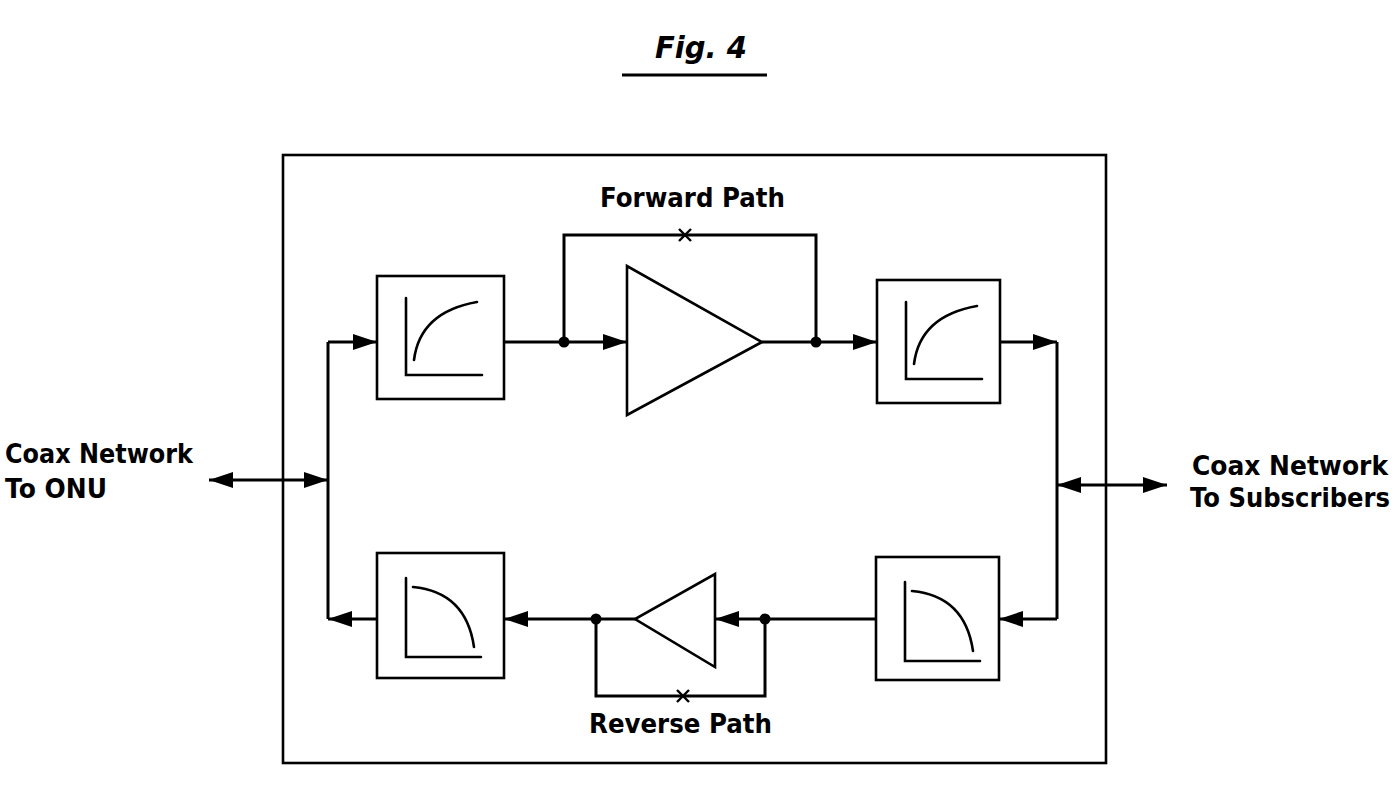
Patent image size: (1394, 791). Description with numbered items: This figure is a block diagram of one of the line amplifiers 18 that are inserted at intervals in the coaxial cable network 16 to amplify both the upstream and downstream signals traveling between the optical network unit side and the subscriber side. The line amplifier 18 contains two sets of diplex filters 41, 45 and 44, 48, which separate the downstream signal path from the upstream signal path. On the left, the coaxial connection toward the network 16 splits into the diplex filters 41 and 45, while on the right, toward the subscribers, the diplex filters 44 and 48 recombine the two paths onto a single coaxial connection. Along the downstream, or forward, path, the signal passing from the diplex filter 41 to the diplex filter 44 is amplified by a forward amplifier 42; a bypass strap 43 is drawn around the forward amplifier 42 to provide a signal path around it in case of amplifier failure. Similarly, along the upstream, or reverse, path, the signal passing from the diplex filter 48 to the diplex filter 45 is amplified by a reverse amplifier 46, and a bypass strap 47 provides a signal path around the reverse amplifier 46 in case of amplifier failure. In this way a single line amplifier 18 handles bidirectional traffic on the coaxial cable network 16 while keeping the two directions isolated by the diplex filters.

The coaxial cable network 16 is at (255, 482).
The line amplifier 18 is at (1135, 694).
The diplex filter 41 is at (447, 276).
The forward amplifier 42 is at (690, 357).
The bypass strap 43 is at (690, 248).
The diplex filter 44 is at (947, 280).
The diplex filter 45 is at (454, 678).
The reverse amplifier 46 is at (705, 635).
The bypass strap 47 is at (682, 692).
The diplex filter 48 is at (952, 680).